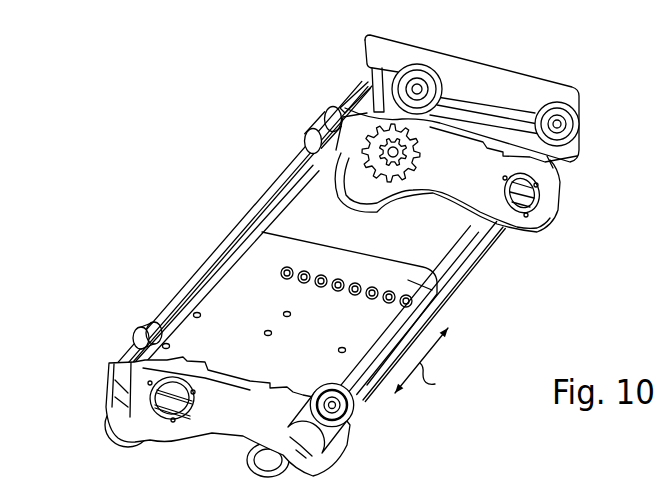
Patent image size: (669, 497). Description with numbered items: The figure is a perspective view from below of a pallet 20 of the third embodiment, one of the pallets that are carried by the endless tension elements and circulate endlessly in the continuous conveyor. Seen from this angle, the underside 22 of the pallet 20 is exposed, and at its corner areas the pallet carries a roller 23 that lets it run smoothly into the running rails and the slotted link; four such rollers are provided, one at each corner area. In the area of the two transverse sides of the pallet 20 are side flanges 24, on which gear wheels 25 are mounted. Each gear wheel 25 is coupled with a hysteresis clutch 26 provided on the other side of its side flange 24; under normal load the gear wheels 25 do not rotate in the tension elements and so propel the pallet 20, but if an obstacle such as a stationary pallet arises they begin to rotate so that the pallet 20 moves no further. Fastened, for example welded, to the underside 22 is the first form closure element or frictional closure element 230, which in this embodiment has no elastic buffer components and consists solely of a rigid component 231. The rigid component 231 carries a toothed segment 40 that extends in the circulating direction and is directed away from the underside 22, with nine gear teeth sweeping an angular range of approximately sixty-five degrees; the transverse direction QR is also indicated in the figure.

The pallet 20 is at (172, 253).
The underside 22 is at (246, 349).
The roller 23 is at (405, 66).
The side flange 24 is at (548, 212).
The gear wheel 25 is at (330, 167).
The hysteresis clutch 26 is at (355, 413).
The toothed segment 40 is at (307, 273).
The first form closure element or frictional closure element 230 is at (268, 236).
The rigid component 231 is at (443, 297).